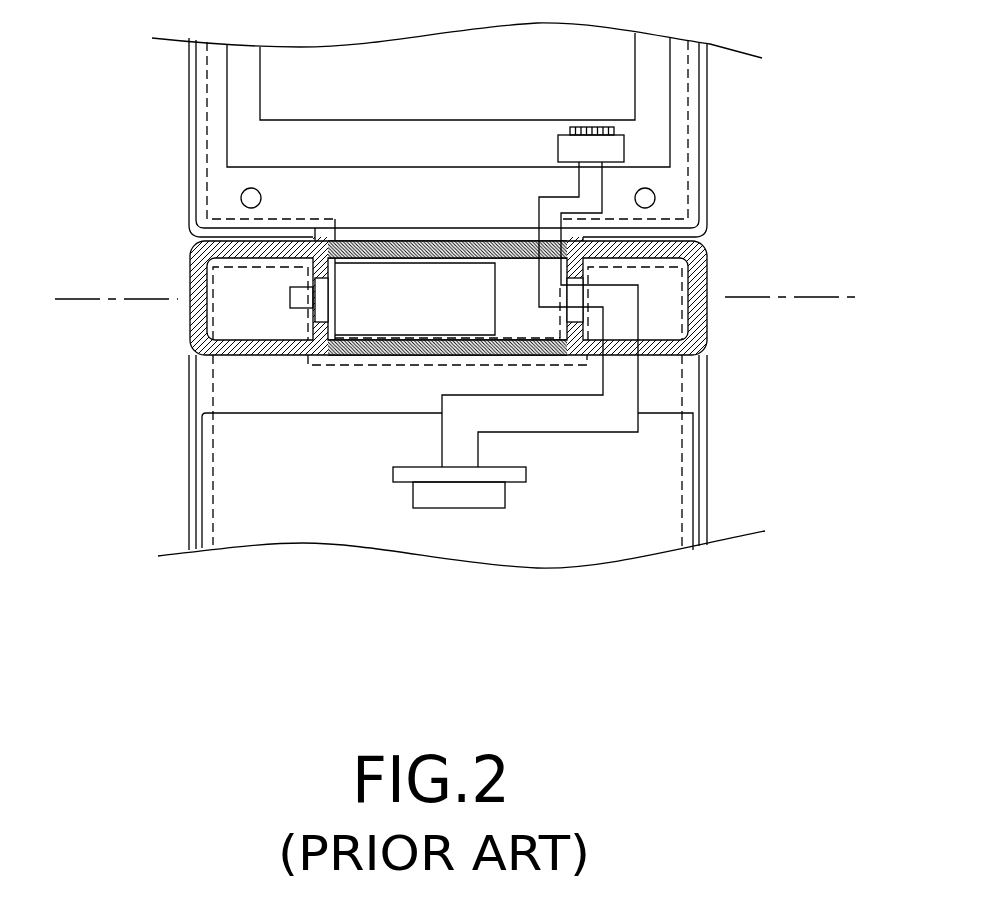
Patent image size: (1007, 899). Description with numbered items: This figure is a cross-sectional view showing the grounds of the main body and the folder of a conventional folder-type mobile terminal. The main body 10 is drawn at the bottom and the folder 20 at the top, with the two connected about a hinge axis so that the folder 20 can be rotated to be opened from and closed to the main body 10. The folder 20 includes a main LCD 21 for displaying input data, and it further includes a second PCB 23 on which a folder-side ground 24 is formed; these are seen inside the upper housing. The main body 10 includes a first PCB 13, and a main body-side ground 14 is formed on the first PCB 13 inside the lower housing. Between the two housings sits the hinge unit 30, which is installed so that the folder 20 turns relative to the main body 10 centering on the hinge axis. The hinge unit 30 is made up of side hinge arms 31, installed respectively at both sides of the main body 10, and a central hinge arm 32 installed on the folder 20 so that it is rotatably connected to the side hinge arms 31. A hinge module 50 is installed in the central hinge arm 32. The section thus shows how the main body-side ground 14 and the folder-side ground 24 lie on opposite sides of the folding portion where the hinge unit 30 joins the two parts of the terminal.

The main body 10 is at (717, 475).
The first PCB 13 is at (565, 548).
The main body-side ground 14 is at (702, 375).
The folder 20 is at (713, 110).
The main LCD 21 is at (270, 73).
The second PCB 23 is at (233, 130).
The folder-side ground 24 is at (207, 182).
The hinge unit 30 is at (713, 265).
The side hinge arms 31 is at (190, 337).
The central hinge arm 32 is at (350, 353).
The hinge module 50 is at (347, 300).